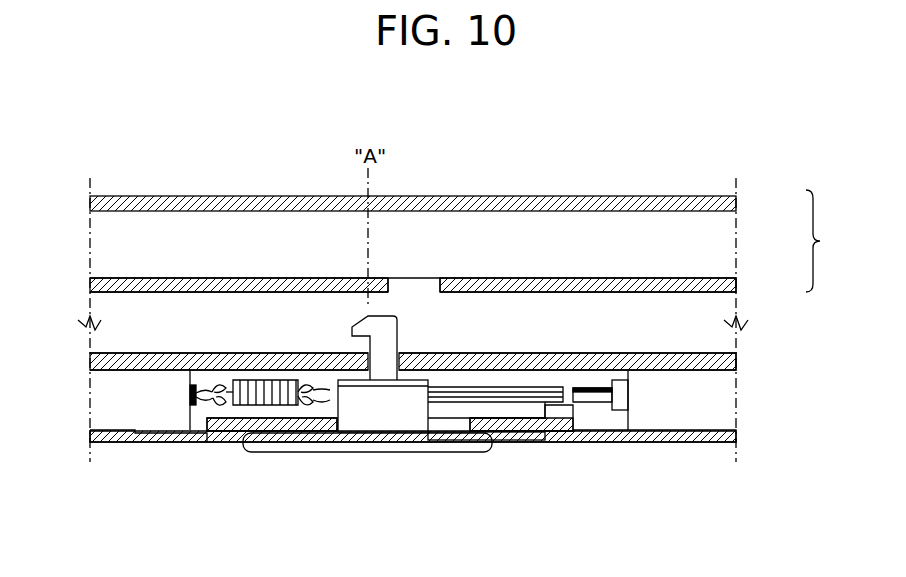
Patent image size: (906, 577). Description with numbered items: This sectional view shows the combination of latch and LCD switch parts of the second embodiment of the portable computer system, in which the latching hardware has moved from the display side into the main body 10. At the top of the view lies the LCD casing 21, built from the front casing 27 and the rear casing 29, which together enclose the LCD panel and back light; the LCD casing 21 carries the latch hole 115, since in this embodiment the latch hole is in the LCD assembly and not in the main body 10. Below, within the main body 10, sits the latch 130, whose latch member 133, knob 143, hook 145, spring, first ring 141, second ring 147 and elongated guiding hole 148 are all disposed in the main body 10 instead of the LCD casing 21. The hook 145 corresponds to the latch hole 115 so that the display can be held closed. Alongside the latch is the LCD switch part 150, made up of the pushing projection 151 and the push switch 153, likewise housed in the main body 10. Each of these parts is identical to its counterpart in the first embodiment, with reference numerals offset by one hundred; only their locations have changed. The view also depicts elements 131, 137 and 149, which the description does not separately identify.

The main body 10 is at (144, 413).
The LCD casing 21 is at (857, 253).
The front casing 27 is at (736, 285).
The rear casing 29 is at (736, 203).
The latch hole 115 is at (436, 280).
The latch 130 is at (304, 366).
The support plate 131 is at (566, 376).
The latch member 133 is at (406, 427).
The base plate 137 is at (686, 442).
The first ring 141 is at (200, 398).
The knob 143 is at (385, 452).
The hook 145 is at (397, 320).
The second ring 147 is at (330, 398).
The elongated guiding hole 148 is at (468, 440).
The top plate 149 is at (435, 360).
The LCD switch part 150 is at (622, 553).
The pushing projection 151 is at (551, 408).
The push switch 153 is at (608, 405).